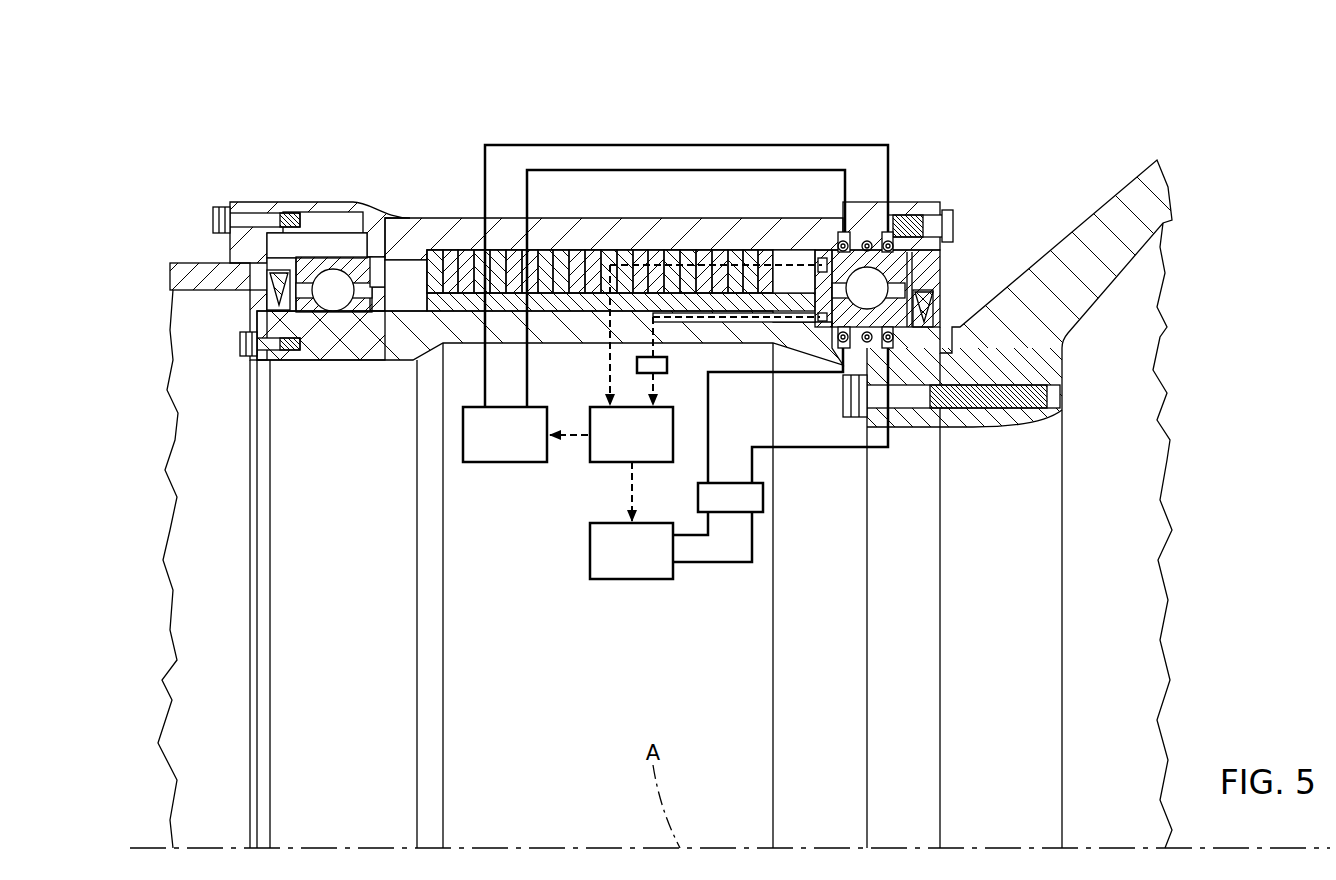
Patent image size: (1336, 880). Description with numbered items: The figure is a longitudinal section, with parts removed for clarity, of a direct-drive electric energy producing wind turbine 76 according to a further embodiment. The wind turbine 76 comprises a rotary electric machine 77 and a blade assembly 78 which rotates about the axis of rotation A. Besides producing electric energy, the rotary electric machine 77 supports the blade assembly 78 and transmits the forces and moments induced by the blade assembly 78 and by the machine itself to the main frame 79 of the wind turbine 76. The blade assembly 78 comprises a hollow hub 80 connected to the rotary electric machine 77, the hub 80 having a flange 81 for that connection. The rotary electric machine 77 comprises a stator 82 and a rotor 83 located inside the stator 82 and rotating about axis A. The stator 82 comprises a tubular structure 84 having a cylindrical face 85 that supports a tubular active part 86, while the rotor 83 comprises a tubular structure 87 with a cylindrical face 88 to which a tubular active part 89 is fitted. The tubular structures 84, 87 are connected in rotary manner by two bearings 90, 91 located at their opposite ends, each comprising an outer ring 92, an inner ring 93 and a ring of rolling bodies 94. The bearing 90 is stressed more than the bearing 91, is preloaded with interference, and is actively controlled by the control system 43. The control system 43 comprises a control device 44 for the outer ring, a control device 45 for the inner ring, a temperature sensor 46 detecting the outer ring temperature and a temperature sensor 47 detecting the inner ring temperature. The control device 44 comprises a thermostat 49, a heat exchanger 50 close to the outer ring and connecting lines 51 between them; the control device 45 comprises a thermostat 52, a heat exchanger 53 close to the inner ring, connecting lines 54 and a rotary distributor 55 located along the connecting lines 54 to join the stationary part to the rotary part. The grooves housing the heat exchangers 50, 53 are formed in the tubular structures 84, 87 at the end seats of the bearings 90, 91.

The control system 43 is at (540, 552).
The control device 44 is at (562, 473).
The control device 45 is at (663, 606).
The temperature sensor 46 is at (823, 275).
The temperature sensor 47 is at (843, 348).
The thermostat 49 is at (503, 443).
The heat exchanger 50 is at (868, 229).
The connecting lines 51 is at (630, 145).
The thermostat 52 is at (630, 568).
The heat exchanger 53 is at (863, 349).
The connecting lines 54 is at (697, 538).
The rotary distributor 55 is at (728, 495).
The wind turbine 76 is at (222, 177).
The rotary electric machine 77 is at (540, 135).
The blade assembly 78 is at (1193, 150).
The main frame 79 is at (188, 283).
The hub 80 is at (1075, 380).
The flange 81 is at (947, 370).
The stator 82 is at (370, 183).
The rotor 83 is at (458, 363).
The tubular structure 84 is at (645, 235).
The cylindrical face 85 is at (600, 255).
The tubular active part 86 is at (422, 277).
The tubular structure 87 is at (555, 327).
The cylindrical face 88 is at (565, 308).
The tubular active part 89 is at (420, 303).
The bearing 90 is at (820, 252).
The bearing 91 is at (350, 244).
The outer ring 92 is at (380, 238).
The inner ring 93 is at (338, 310).
The ring of rolling bodies 94 is at (327, 287).